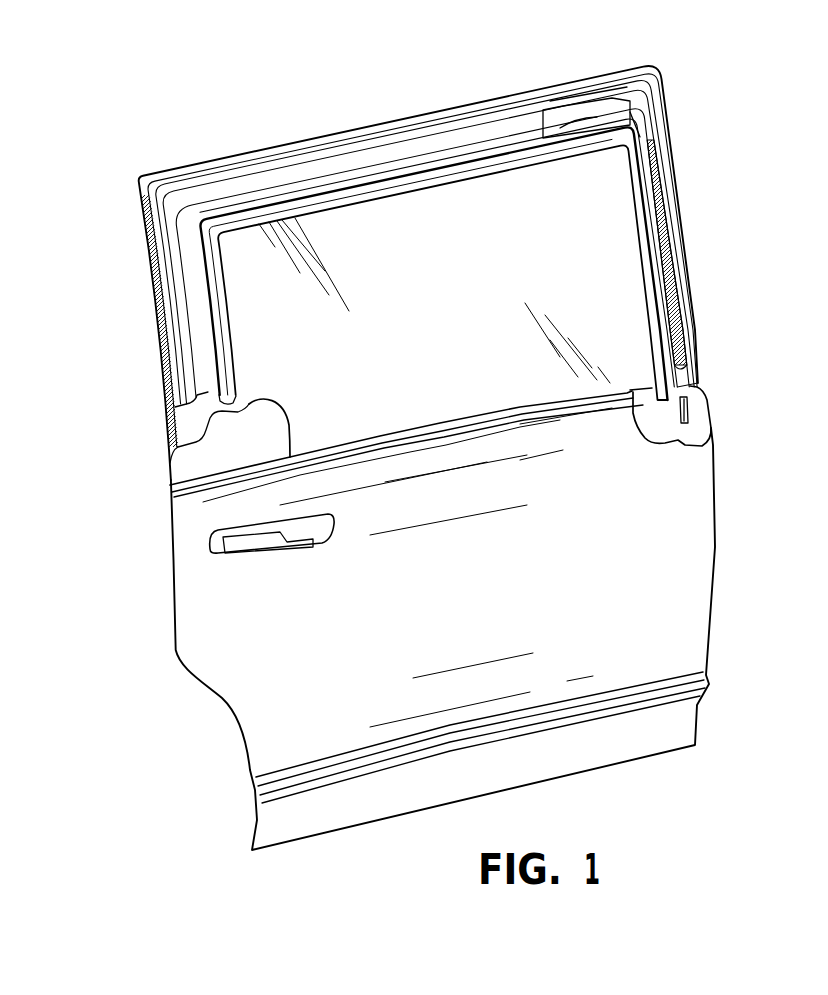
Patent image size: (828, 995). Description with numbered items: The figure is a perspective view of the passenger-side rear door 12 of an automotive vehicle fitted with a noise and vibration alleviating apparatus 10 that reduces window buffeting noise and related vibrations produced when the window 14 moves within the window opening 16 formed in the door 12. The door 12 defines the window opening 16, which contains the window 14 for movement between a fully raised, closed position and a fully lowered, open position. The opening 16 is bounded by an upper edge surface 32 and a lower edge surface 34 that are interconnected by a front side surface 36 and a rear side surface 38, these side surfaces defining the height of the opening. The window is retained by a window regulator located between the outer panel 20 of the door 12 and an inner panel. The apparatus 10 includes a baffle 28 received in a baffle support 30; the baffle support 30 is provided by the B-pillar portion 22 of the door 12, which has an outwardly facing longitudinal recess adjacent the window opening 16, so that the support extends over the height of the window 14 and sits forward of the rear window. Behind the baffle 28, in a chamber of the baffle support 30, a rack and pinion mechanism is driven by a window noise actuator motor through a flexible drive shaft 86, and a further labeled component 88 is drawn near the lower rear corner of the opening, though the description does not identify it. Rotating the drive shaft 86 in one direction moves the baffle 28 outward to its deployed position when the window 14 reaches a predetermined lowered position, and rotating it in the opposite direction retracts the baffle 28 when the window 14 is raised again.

The noise and vibration alleviating apparatus 10 is at (667, 173).
The door 12 is at (208, 608).
The window 14 is at (387, 282).
The window opening 16 is at (640, 127).
The outer panel 20 is at (277, 693).
The B-pillar portion 22 is at (697, 358).
The baffle 28 is at (686, 345).
The baffle support 30 is at (676, 312).
The upper edge surface 32 is at (456, 178).
The lower edge surface 34 is at (456, 424).
The front side surface 36 is at (658, 228).
The rear side surface 38 is at (213, 303).
The flexible drive shaft 86 is at (702, 393).
The latch housing 88 is at (706, 428).